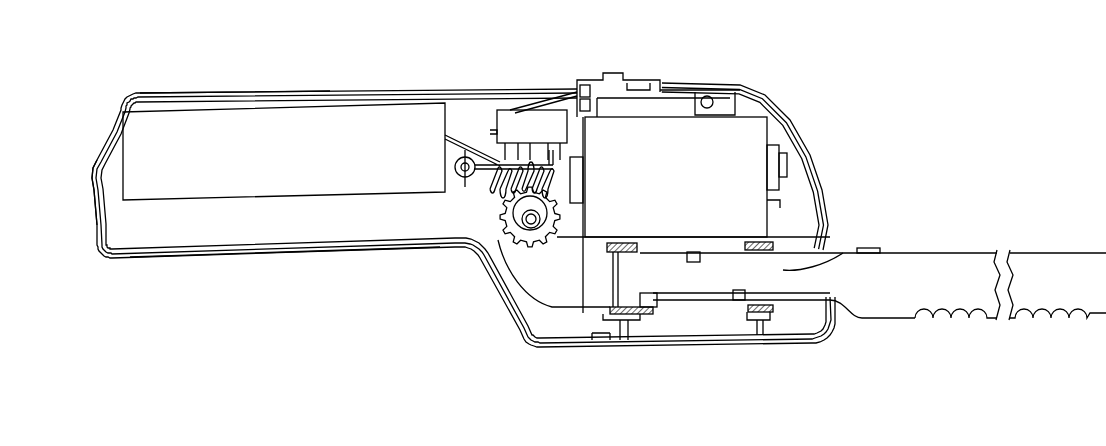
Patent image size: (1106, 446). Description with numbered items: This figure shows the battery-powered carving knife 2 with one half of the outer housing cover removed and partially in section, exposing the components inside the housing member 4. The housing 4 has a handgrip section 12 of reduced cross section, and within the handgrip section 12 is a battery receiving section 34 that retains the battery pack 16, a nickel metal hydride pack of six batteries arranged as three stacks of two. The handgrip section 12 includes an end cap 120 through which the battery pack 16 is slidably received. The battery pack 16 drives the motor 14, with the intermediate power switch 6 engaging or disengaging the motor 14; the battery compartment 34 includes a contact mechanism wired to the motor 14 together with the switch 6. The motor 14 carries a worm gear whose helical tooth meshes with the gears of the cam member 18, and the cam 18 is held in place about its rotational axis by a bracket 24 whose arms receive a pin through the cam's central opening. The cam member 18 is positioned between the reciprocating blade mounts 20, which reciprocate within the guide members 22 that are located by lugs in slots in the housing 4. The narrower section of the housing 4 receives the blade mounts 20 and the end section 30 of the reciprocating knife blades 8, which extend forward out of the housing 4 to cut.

The carving knife 2 is at (883, 135).
The housing member 4 is at (782, 108).
The power switch 6 is at (613, 63).
The reciprocating knife blades 8 is at (1023, 253).
The handgrip section 12 is at (218, 97).
The motor 14 is at (685, 132).
The battery pack 16 is at (328, 125).
The cam member 18 is at (505, 253).
The reciprocating blade mounts 20 is at (542, 287).
The guide members 22 is at (653, 323).
The bracket 24 is at (578, 214).
The end section 30 is at (840, 250).
The battery receiving section 34 is at (213, 223).
The end cap 120 is at (105, 237).